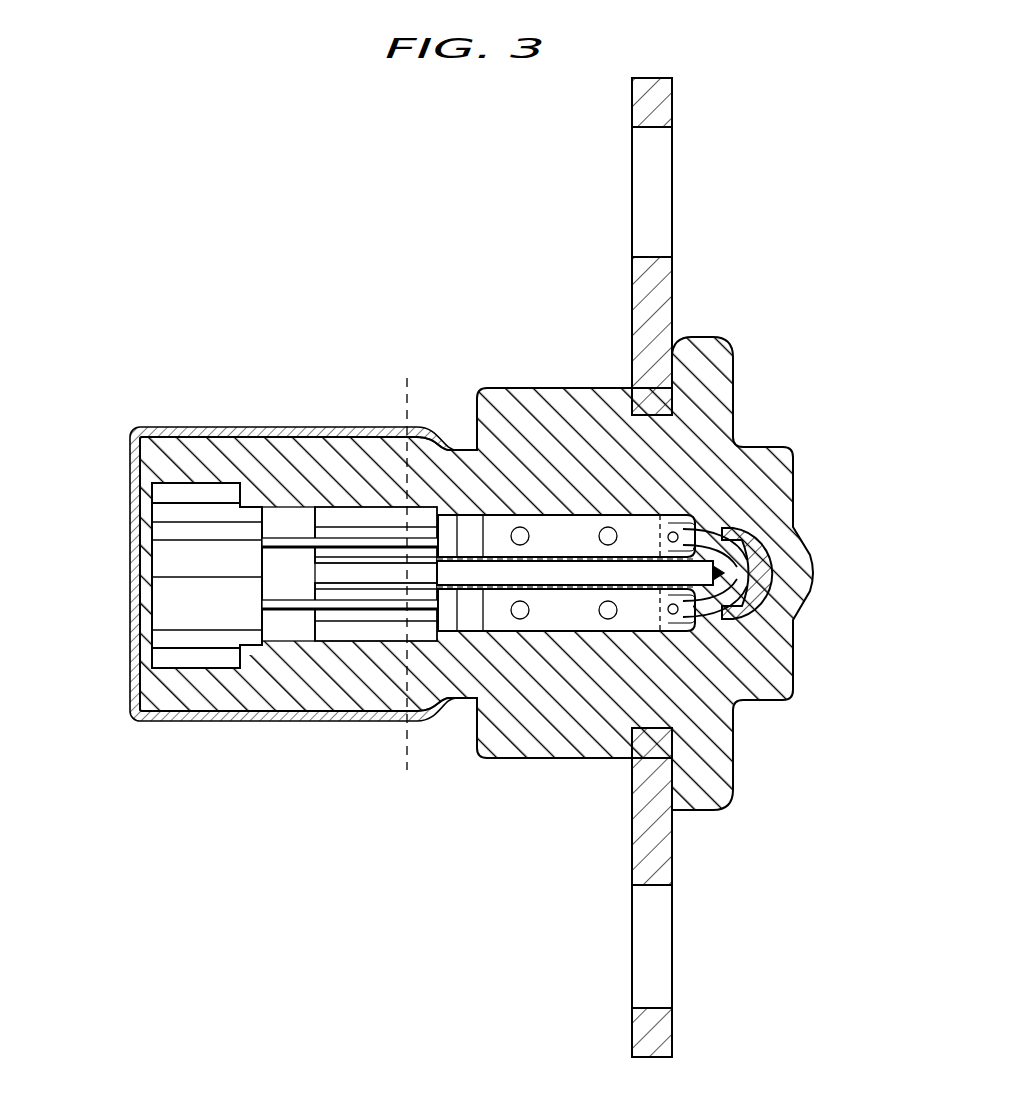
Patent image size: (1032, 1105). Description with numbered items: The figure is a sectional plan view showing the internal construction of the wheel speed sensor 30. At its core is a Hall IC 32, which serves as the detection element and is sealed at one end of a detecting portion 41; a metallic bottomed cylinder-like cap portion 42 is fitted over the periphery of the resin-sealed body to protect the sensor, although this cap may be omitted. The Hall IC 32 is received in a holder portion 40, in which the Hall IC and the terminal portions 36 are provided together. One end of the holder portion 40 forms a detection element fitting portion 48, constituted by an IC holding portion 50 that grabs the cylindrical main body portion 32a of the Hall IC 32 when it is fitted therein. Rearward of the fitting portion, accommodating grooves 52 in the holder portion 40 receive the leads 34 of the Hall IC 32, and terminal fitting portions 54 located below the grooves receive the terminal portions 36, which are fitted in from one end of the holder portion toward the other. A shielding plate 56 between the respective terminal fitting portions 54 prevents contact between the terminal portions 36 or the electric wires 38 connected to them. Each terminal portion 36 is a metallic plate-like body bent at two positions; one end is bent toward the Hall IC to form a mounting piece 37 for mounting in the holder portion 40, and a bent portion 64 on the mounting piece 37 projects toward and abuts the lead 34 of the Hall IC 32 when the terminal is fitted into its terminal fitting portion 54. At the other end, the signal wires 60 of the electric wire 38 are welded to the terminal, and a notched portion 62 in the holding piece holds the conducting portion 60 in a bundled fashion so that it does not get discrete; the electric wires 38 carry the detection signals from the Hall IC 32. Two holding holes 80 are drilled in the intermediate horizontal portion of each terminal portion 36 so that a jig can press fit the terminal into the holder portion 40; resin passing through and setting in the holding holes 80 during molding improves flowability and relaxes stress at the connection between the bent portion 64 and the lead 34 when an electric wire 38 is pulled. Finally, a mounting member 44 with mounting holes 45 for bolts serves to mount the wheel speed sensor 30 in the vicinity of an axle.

The wheel speed sensor 30 is at (823, 180).
The Hall IC 32 is at (168, 590).
The cylindrical main body portion 32a is at (178, 545).
The leads 34 is at (392, 545).
The terminal portions 36 is at (578, 533).
The mounting piece 37 is at (540, 527).
The electric wires 38 is at (755, 573).
The holder portion 40 is at (297, 580).
The detecting portion 41 is at (249, 468).
The cap portion 42 is at (134, 430).
The mounting member 44 is at (665, 318).
The mounting holes 45 is at (665, 228).
The detection element fitting portion 48 is at (191, 645).
The IC holding portion 50 is at (155, 478).
The accommodating grooves 52 is at (355, 545).
The terminal fitting portions 54 is at (408, 570).
The shielding plate 56 is at (738, 443).
The signal wires 60 is at (675, 535).
The notched portion 62 is at (707, 528).
The bent portion 64 is at (477, 530).
The holding holes 80 is at (516, 527).